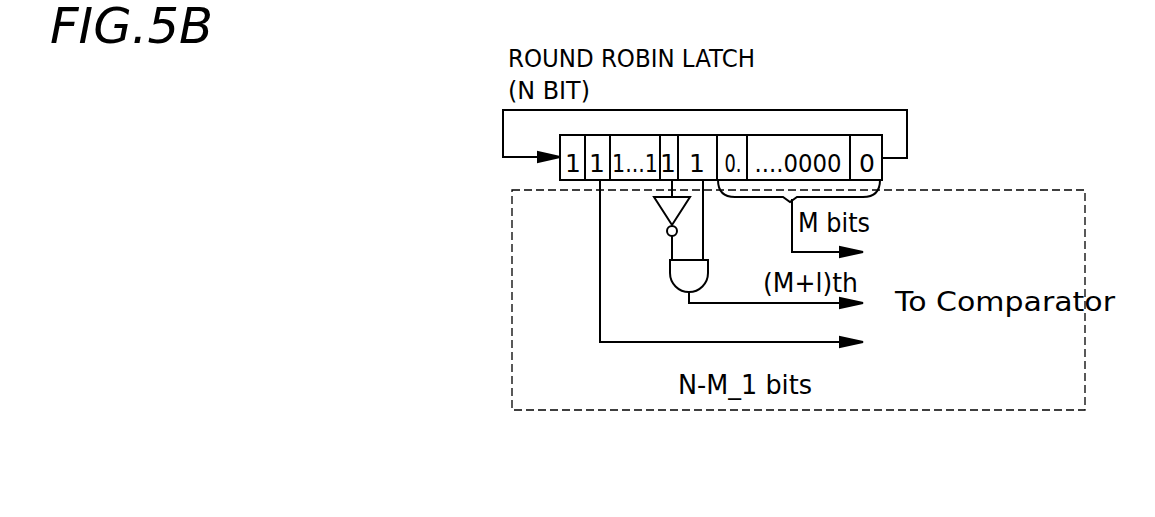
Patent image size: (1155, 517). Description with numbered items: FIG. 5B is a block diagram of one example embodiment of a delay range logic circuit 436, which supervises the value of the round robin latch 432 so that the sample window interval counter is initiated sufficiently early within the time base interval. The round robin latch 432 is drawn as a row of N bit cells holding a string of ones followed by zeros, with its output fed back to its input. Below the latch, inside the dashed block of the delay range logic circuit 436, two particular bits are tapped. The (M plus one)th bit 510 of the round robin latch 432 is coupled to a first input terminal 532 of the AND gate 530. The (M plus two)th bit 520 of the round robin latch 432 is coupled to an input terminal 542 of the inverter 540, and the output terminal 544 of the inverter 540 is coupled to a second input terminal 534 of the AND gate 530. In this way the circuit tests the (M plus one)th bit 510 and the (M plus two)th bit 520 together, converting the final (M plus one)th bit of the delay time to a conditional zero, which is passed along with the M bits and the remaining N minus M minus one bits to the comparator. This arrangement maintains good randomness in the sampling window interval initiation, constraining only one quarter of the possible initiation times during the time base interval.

The (M+2)th bit 520 is at (667, 140).
The (M+1)th bit 510 is at (690, 140).
The round robin latch 432 is at (787, 140).
The delay range logic circuit 436 is at (512, 258).
The input terminal of inverter 542 is at (667, 210).
The inverter 540 is at (667, 232).
The output terminal of inverter 544 is at (668, 268).
The first input terminal of AND gate 532 is at (703, 231).
The second input terminal of AND gate 534 is at (703, 259).
The AND gate 530 is at (672, 278).